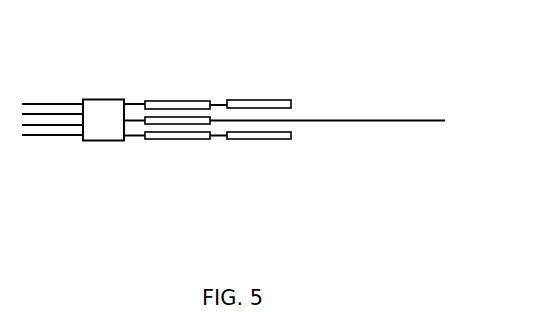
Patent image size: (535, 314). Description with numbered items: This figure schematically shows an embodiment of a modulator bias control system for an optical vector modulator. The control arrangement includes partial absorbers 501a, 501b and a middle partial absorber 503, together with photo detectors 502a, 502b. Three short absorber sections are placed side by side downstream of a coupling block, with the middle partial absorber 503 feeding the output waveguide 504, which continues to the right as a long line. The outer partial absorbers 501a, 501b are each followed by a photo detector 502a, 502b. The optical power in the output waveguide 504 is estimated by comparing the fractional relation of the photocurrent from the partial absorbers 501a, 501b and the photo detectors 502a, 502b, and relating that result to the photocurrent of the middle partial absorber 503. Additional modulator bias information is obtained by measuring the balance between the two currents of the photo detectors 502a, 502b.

The partial absorber 501a is at (159, 100).
The partial absorber 501b is at (160, 140).
The photo detector 502a is at (251, 100).
The photo detector 502b is at (277, 141).
The middle partial absorber 503 is at (210, 124).
The output waveguide 504 is at (363, 121).